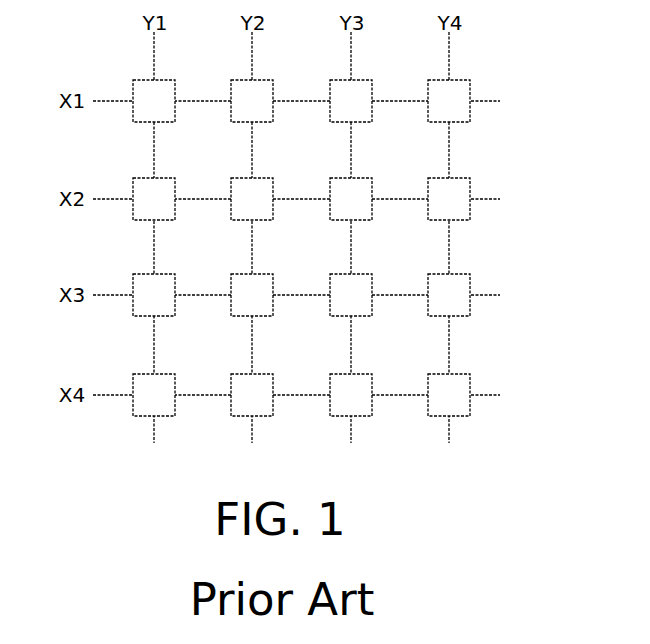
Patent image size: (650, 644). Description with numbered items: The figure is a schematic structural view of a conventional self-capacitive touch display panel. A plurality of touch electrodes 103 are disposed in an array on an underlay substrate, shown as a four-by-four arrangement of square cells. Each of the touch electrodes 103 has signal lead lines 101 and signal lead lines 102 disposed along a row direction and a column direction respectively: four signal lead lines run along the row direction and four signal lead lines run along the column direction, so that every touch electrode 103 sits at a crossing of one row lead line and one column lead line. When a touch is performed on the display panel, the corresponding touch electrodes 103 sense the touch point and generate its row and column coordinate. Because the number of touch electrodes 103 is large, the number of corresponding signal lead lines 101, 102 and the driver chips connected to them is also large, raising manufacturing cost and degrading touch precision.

The signal lead lines 101 is at (452, 56).
The signal lead lines 102 is at (483, 193).
The touch electrodes 103 is at (450, 295).